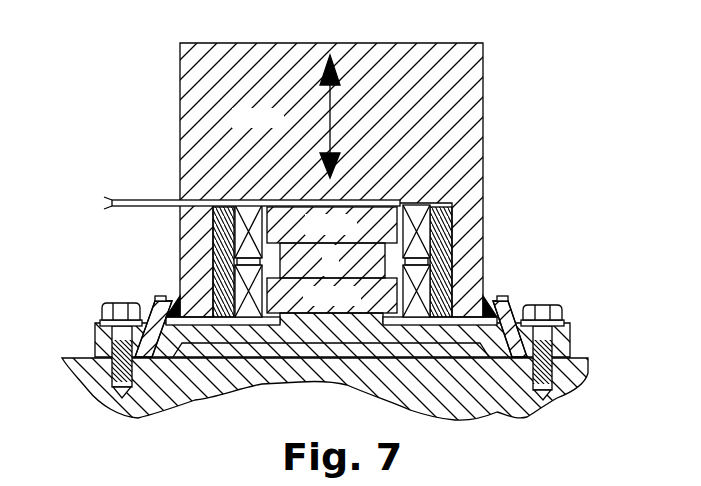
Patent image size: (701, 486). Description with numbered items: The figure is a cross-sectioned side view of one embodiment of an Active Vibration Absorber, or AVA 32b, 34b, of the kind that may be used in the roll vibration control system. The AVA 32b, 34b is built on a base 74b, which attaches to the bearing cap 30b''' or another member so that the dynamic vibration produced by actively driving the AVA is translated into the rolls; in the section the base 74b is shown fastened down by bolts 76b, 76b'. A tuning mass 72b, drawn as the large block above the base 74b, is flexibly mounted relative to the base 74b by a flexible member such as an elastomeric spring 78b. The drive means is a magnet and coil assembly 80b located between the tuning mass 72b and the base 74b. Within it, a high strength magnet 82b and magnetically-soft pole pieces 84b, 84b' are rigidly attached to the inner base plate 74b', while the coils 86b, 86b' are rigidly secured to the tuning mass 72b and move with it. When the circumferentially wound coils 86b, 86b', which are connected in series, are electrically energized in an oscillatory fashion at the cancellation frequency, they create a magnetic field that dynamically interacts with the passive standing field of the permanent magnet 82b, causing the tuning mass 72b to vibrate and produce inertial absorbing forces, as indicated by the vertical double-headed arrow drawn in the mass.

The bearing cap 30b''' is at (372, 389).
The base 74b is at (382, 392).
The inner base plate 74b' is at (349, 407).
The bolt 76b is at (579, 339).
The bolt 76b' is at (82, 329).
The elastomeric spring 78b is at (177, 296).
The magnet and coil assembly 80b is at (288, 204).
The tuning mass 72b is at (279, 124).
The Active Vibration Absorber 32b is at (414, 180).
The Active Vibration Absorber 34b is at (414, 180).
The high strength magnet 82b is at (403, 266).
The magnetically-soft pole piece 84b is at (332, 225).
The magnetically-soft pole piece 84b' is at (332, 295).
The coil 86b is at (404, 227).
The coil 86b' is at (415, 284).